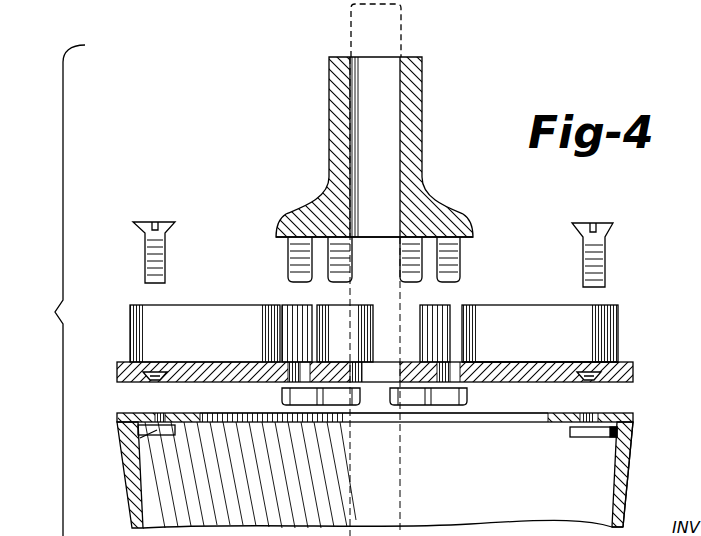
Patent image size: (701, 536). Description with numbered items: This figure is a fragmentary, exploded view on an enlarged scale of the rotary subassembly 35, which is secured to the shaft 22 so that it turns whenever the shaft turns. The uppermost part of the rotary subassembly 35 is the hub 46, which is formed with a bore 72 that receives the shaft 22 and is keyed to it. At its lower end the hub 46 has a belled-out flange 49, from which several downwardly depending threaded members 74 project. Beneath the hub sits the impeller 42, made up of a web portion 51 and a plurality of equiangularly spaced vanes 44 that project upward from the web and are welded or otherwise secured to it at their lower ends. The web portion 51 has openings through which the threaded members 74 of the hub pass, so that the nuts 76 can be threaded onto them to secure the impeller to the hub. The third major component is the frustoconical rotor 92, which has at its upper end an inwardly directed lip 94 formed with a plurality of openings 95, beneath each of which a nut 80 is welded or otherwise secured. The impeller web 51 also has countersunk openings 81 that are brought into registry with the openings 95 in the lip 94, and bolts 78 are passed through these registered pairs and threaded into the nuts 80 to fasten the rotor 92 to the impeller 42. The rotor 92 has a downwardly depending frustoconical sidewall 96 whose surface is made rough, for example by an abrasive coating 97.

The shaft 22 is at (405, 32).
The rotary subassembly 35 is at (49, 290).
The impeller 42 is at (633, 347).
The vanes 44 is at (292, 305).
The hub 46 is at (422, 95).
The belled-out flange 49 is at (452, 215).
The web portion 51 is at (552, 380).
The bore 72 is at (352, 80).
The threaded members 74 is at (298, 250).
The nuts 76 is at (282, 393).
The bolts 78 is at (162, 224).
The nut 80 is at (125, 458).
The countersunk openings 81 is at (158, 370).
The rotor 92 is at (375, 470).
The lip 94 is at (196, 418).
The openings 95 is at (150, 411).
The sidewall 96 is at (620, 531).
The abrasive coating 97 is at (628, 462).